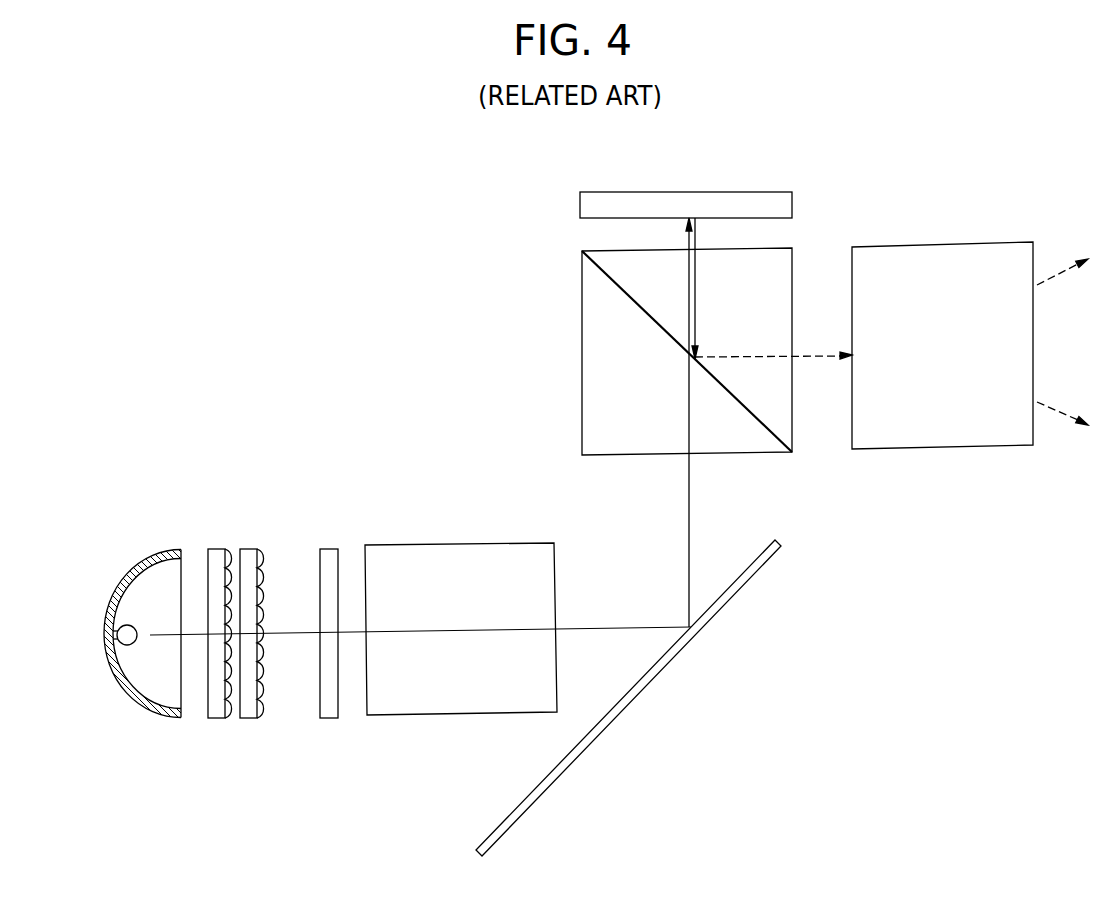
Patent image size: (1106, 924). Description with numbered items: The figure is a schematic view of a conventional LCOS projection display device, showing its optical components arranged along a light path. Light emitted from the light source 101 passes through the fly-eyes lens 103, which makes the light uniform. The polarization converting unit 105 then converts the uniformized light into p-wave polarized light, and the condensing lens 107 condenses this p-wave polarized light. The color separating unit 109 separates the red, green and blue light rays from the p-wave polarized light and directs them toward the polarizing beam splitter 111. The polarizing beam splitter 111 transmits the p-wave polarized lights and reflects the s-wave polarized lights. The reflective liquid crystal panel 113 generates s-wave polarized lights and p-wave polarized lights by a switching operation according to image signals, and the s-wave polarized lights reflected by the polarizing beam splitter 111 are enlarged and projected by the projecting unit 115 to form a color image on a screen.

The light source 101 is at (143, 558).
The fly-eyes lens 103 is at (217, 548).
The polarization converting unit 105 is at (328, 551).
The condensing lens 107 is at (478, 545).
The color separating unit 109 is at (648, 683).
The polarizing beam splitter 111 is at (582, 297).
The reflective liquid crystal panel 113 is at (764, 197).
The projecting unit 115 is at (965, 250).